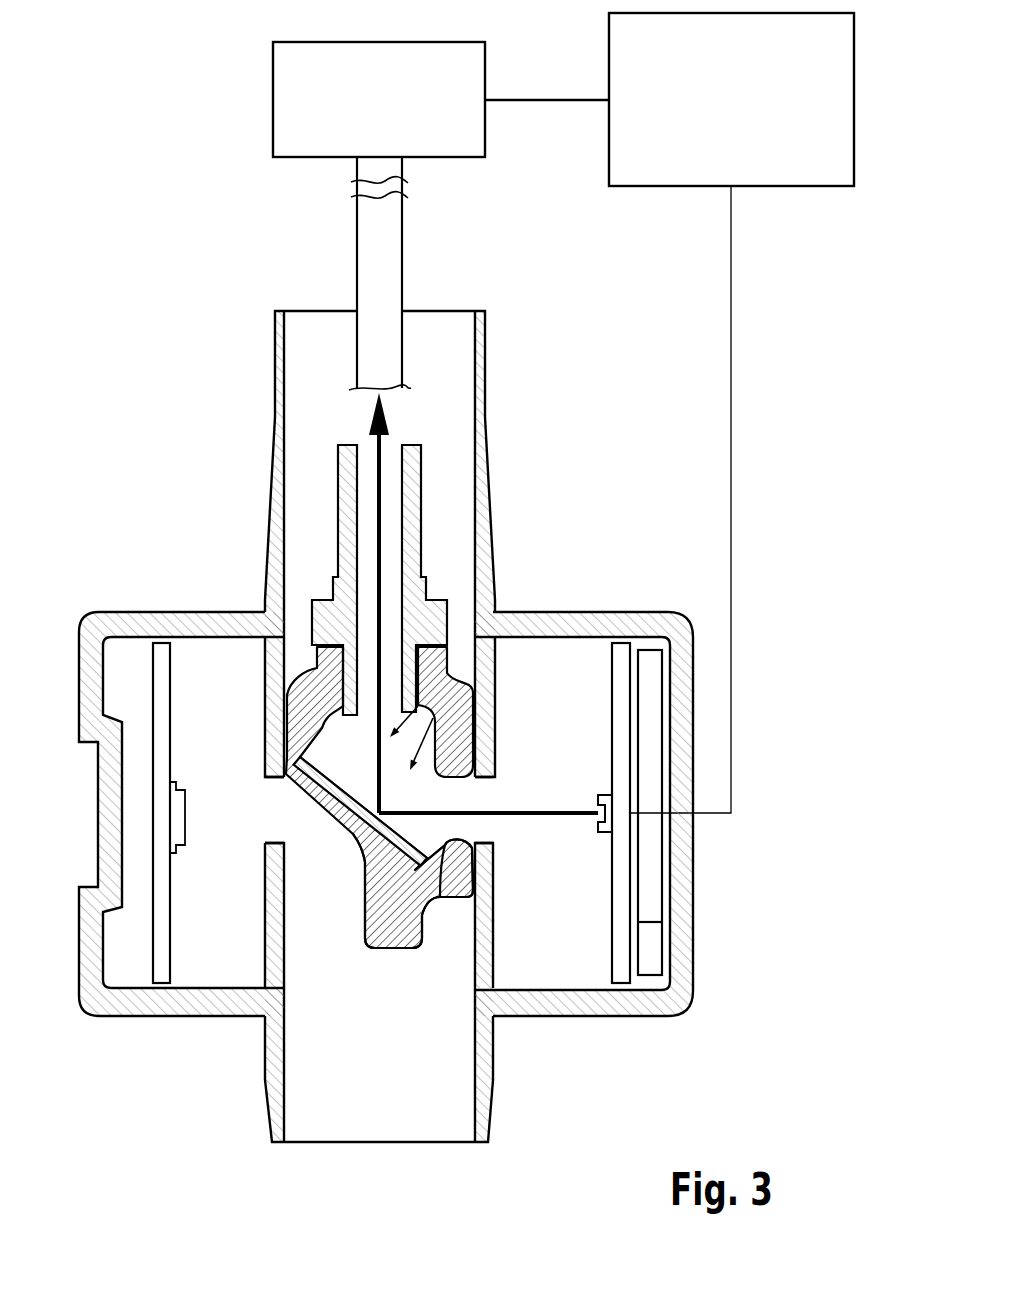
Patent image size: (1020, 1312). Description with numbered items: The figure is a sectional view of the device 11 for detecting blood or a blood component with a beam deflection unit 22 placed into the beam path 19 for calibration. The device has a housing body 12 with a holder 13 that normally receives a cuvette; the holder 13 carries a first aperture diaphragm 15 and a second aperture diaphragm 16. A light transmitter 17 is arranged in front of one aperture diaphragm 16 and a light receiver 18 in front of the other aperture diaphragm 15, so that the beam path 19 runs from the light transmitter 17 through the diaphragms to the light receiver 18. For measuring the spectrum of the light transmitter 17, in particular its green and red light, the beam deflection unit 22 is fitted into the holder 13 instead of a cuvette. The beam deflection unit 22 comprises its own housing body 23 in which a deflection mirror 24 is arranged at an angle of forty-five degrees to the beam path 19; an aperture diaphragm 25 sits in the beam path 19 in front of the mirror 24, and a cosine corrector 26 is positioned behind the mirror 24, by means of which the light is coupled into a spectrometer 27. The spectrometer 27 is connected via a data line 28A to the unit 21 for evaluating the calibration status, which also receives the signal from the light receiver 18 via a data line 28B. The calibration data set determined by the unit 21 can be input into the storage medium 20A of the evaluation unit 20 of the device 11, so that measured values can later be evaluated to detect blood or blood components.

The device for detecting blood or a blood component 11 is at (210, 500).
The housing body 12 is at (125, 620).
The holder 13 is at (436, 700).
The first aperture diaphragm 15 is at (275, 785).
The second aperture diaphragm 16 is at (483, 782).
The light transmitter 17 is at (609, 828).
The light receiver 18 is at (173, 804).
The beam path 19 is at (542, 818).
The evaluation unit 20 is at (652, 906).
The storage medium 20A is at (655, 957).
The evaluation unit for the calibration status 21 is at (803, 187).
The beam deflection unit 22 is at (420, 704).
The housing body of the beam deflection unit 23 is at (463, 737).
The deflection mirror 24 is at (393, 836).
The aperture diaphragm 25 is at (452, 853).
The cosine corrector 26 is at (413, 483).
The spectrometer 27 is at (287, 102).
The data line 28A is at (523, 101).
The data line 28B is at (733, 445).